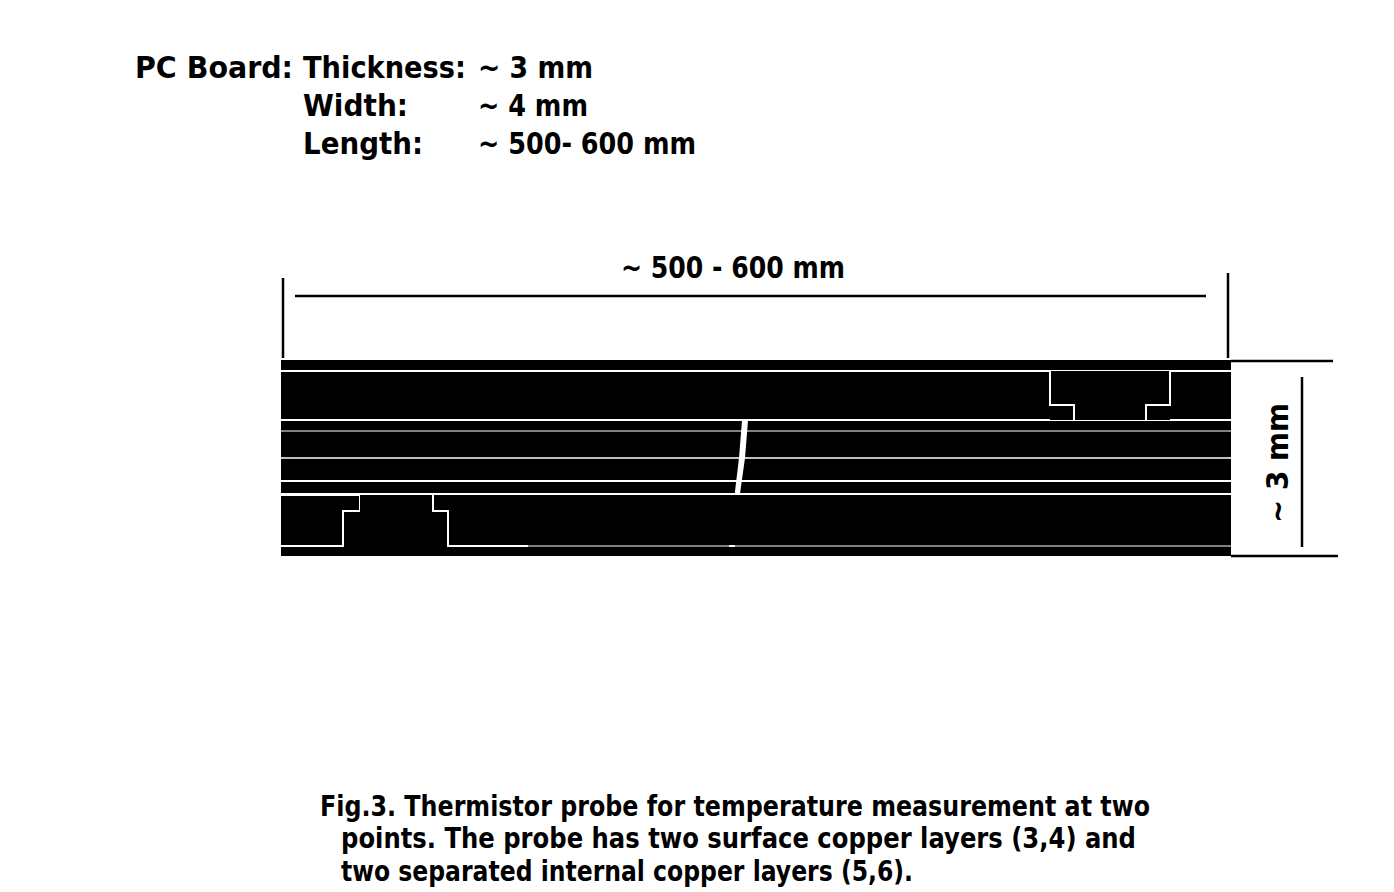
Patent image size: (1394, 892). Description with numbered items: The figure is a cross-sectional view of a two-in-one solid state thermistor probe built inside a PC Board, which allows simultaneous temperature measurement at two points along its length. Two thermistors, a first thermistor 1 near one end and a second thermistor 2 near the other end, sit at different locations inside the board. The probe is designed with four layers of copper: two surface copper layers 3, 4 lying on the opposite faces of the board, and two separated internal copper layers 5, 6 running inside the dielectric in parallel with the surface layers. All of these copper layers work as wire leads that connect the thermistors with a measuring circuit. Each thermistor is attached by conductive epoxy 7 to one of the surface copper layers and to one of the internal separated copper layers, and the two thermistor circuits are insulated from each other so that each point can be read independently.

The thermistor 1 is at (1123, 350).
The thermistor 2 is at (297, 548).
The copper layer 3 is at (382, 350).
The insulator (PC Board) 4 is at (1075, 548).
The copper layer 5 is at (847, 412).
The conductive epoxy 6 is at (893, 487).
The conductive epoxy 7 is at (420, 548).